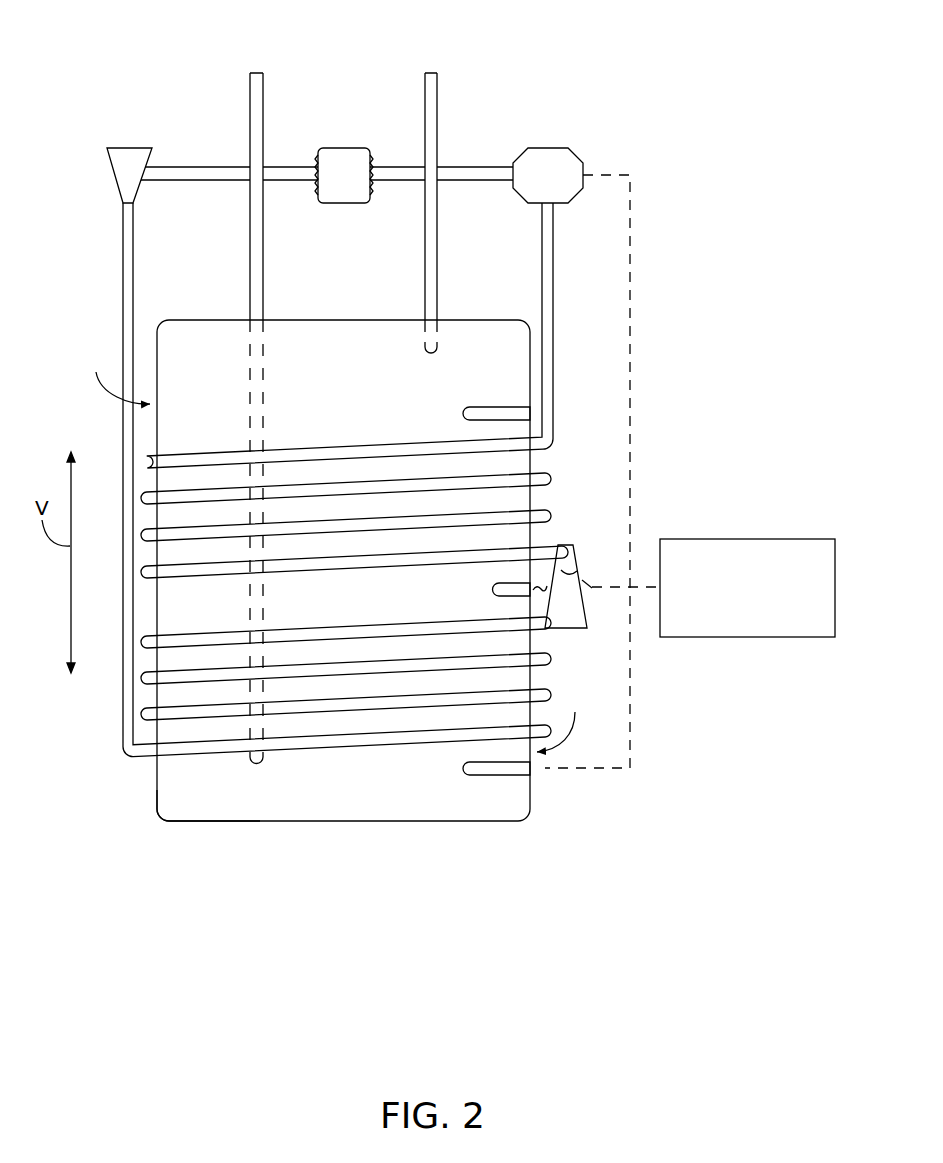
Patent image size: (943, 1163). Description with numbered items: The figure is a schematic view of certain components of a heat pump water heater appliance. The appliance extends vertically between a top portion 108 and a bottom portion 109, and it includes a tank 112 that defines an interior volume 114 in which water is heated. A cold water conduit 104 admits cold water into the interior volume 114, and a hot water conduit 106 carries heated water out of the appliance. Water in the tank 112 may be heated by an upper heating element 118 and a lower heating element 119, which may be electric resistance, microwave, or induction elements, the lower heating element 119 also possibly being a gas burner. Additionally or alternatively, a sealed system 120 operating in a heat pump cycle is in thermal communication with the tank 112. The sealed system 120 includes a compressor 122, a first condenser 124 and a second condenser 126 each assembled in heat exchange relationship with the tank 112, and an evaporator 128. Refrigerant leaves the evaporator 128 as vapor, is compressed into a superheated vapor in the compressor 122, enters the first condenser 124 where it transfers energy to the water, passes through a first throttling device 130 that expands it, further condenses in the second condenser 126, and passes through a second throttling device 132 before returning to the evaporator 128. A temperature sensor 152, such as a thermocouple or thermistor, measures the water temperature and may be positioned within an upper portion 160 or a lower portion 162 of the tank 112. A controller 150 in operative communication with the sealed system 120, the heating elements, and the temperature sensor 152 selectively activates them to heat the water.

The cold water conduit 104 is at (250, 110).
The hot water conduit 106 is at (425, 110).
The top portion 108 is at (155, 308).
The bottom portion 109 is at (148, 828).
The tank 112 is at (540, 497).
The interior volume 114 is at (308, 350).
The upper heating element 118 is at (463, 413).
The lower heating element 119 is at (463, 770).
The sealed system 120 is at (627, 82).
The compressor 122 is at (546, 148).
The first condenser 124 is at (385, 445).
The second condenser 126 is at (360, 752).
The evaporator 128 is at (340, 149).
The first throttling device 130 is at (572, 548).
The second throttling device 132 is at (107, 172).
The controller 150 is at (747, 588).
The temperature sensor 152 is at (494, 590).
The upper portion 160 is at (113, 375).
The lower portion 162 is at (565, 720).